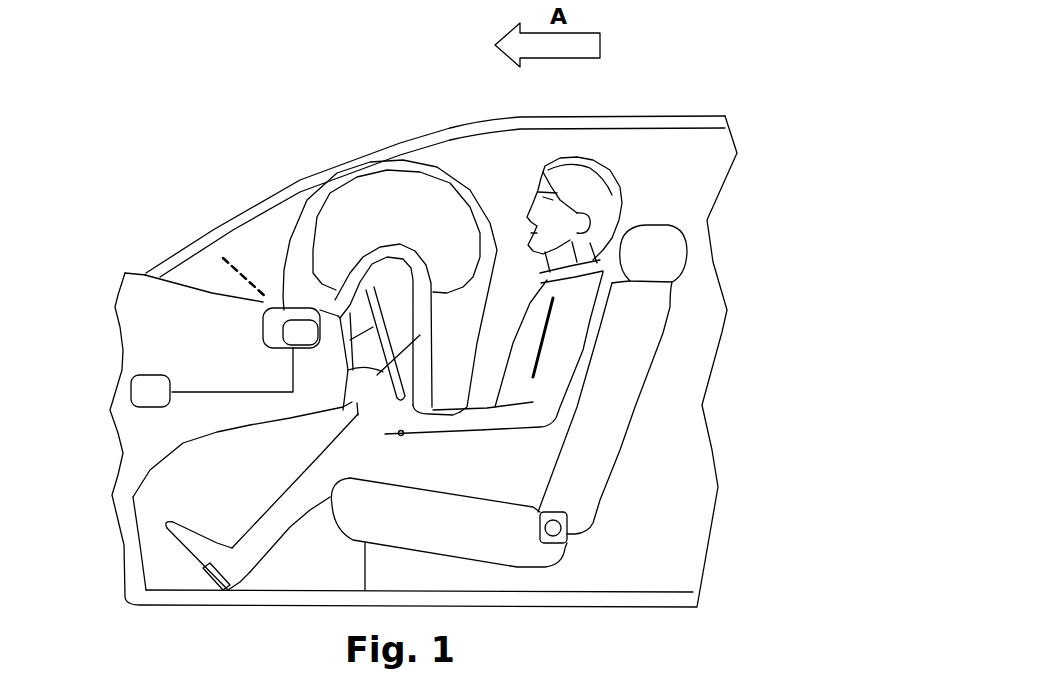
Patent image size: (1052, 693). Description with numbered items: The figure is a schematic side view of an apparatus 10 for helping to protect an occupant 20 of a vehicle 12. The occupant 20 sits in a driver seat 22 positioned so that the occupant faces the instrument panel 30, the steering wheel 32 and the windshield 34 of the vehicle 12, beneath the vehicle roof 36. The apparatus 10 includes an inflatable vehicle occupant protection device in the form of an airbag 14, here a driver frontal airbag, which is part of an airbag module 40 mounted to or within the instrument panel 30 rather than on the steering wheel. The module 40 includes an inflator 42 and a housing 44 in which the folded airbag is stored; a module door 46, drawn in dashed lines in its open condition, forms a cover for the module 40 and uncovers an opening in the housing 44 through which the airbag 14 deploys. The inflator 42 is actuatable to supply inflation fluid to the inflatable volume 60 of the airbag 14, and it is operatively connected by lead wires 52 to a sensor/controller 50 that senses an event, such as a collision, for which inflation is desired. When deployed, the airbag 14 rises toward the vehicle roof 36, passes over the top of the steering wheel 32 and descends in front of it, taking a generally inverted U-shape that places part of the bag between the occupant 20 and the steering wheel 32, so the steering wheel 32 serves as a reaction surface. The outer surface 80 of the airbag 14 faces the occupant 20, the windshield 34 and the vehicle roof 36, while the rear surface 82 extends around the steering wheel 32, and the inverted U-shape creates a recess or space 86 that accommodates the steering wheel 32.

The apparatus 10 is at (184, 187).
The vehicle 12 is at (148, 67).
The airbag 14 is at (417, 203).
The occupant 20 is at (612, 127).
The driver seat 22 is at (597, 440).
The instrument panel 30 is at (273, 405).
The steering wheel 32 is at (403, 436).
The windshield 34 is at (283, 187).
The vehicle roof 36 is at (393, 137).
The airbag module 40 is at (193, 337).
The inflator 42 is at (287, 338).
The housing 44 is at (288, 350).
The module door 46 is at (232, 290).
The sensor/controller 50 is at (157, 393).
The lead wires 52 is at (212, 393).
The inflatable volume 60 is at (405, 224).
The outer surface 80 is at (492, 232).
The rear surface 82 is at (364, 398).
The recess or space 86 is at (357, 415).